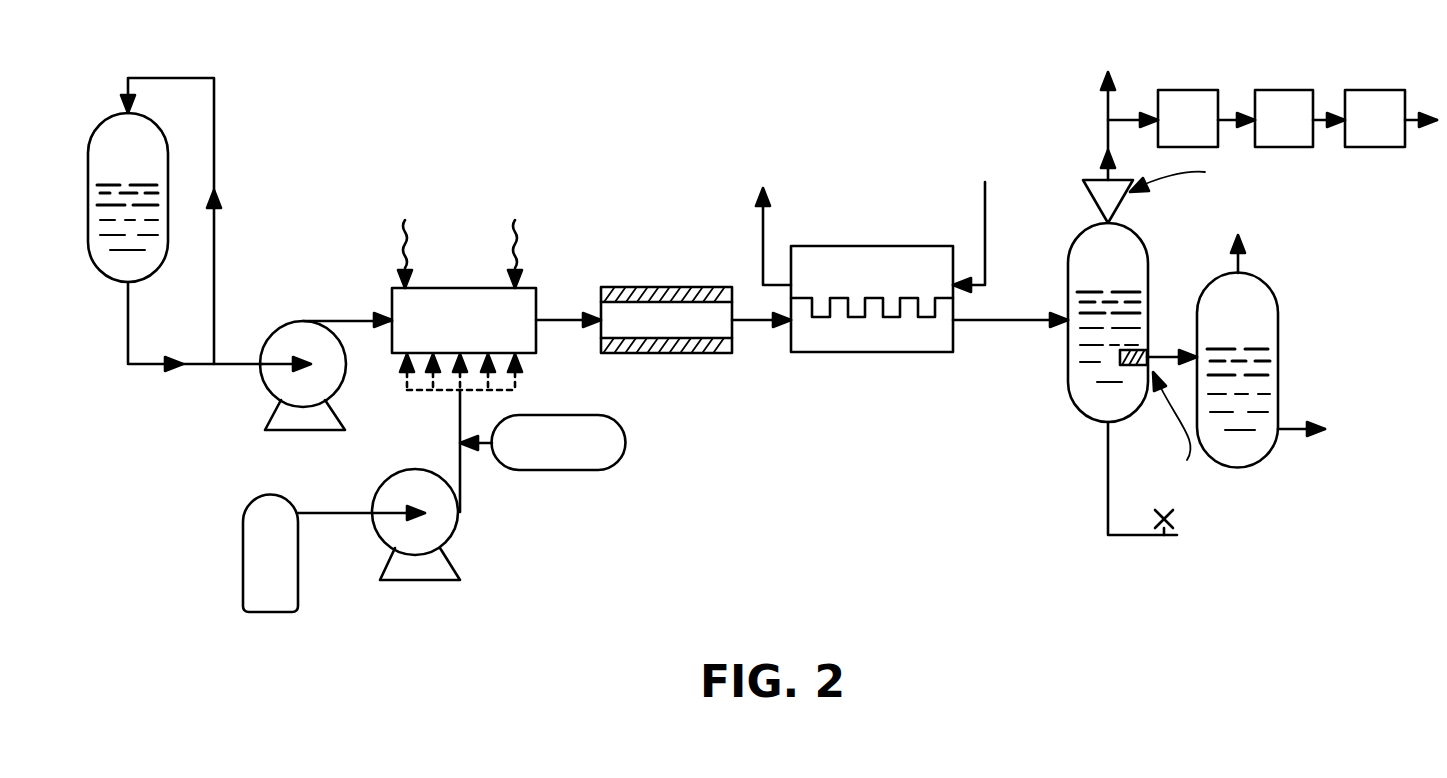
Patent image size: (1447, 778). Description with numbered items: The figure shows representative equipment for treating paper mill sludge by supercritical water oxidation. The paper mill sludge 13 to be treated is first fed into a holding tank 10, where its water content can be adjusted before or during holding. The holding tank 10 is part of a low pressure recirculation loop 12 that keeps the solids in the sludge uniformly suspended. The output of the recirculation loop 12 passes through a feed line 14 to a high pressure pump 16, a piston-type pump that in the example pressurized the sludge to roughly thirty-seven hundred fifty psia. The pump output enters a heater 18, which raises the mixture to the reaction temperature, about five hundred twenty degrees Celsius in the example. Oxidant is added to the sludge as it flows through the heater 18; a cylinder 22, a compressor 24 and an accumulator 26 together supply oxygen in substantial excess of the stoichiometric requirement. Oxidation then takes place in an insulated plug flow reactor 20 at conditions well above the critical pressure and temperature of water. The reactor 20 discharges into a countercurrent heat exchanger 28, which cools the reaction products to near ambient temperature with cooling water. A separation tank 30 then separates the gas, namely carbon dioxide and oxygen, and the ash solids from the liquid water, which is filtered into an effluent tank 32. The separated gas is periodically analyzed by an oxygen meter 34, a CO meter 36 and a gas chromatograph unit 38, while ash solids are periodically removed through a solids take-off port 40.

The holding tank 10 is at (83, 148).
The low pressure recirculation loop 12 is at (214, 145).
The paper mill sludge 13 is at (107, 212).
The feed line 14 is at (237, 367).
The high pressure pump 16 is at (288, 322).
The heater 18 is at (455, 288).
The insulated plug flow reactor 20 is at (668, 313).
The cylinder 22 is at (243, 542).
The compressor 24 is at (460, 523).
The accumulator 26 is at (558, 470).
The countercurrent heat exchanger 28 is at (858, 246).
The separation tank 30 is at (1068, 367).
The effluent tank 32 is at (1278, 315).
The oxygen meter 34 is at (1185, 90).
The CO meter 36 is at (1275, 90).
The gas chromatograph unit 38 is at (1370, 90).
The solids take-off port 40 is at (1163, 538).